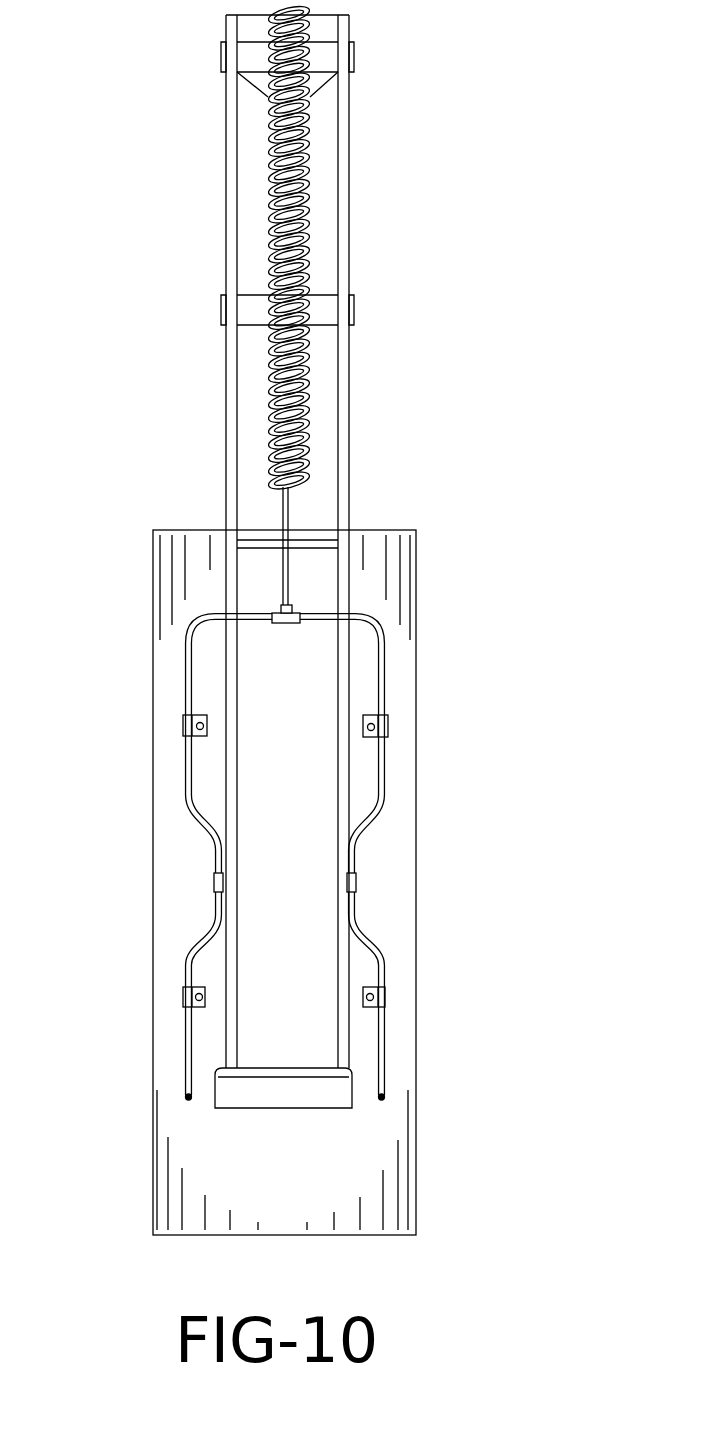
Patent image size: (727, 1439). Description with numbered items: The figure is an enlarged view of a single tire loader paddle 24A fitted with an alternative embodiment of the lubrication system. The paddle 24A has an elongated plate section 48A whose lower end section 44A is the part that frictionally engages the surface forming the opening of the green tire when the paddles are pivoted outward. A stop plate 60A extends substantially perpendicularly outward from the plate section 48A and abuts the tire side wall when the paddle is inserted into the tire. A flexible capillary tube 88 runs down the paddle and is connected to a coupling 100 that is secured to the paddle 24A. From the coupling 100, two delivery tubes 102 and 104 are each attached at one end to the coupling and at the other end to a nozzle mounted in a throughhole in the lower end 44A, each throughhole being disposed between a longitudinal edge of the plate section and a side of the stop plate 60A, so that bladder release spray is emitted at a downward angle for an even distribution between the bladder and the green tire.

The flexible capillary tube 88 is at (287, 507).
The coupling 100 is at (285, 613).
The plate section 48A is at (435, 700).
The delivery tube 102 is at (186, 771).
The delivery tube 104 is at (385, 772).
The tire loader paddle 24A is at (388, 890).
The stop plate 60A is at (283, 1095).
The lower end section 44A is at (435, 1133).